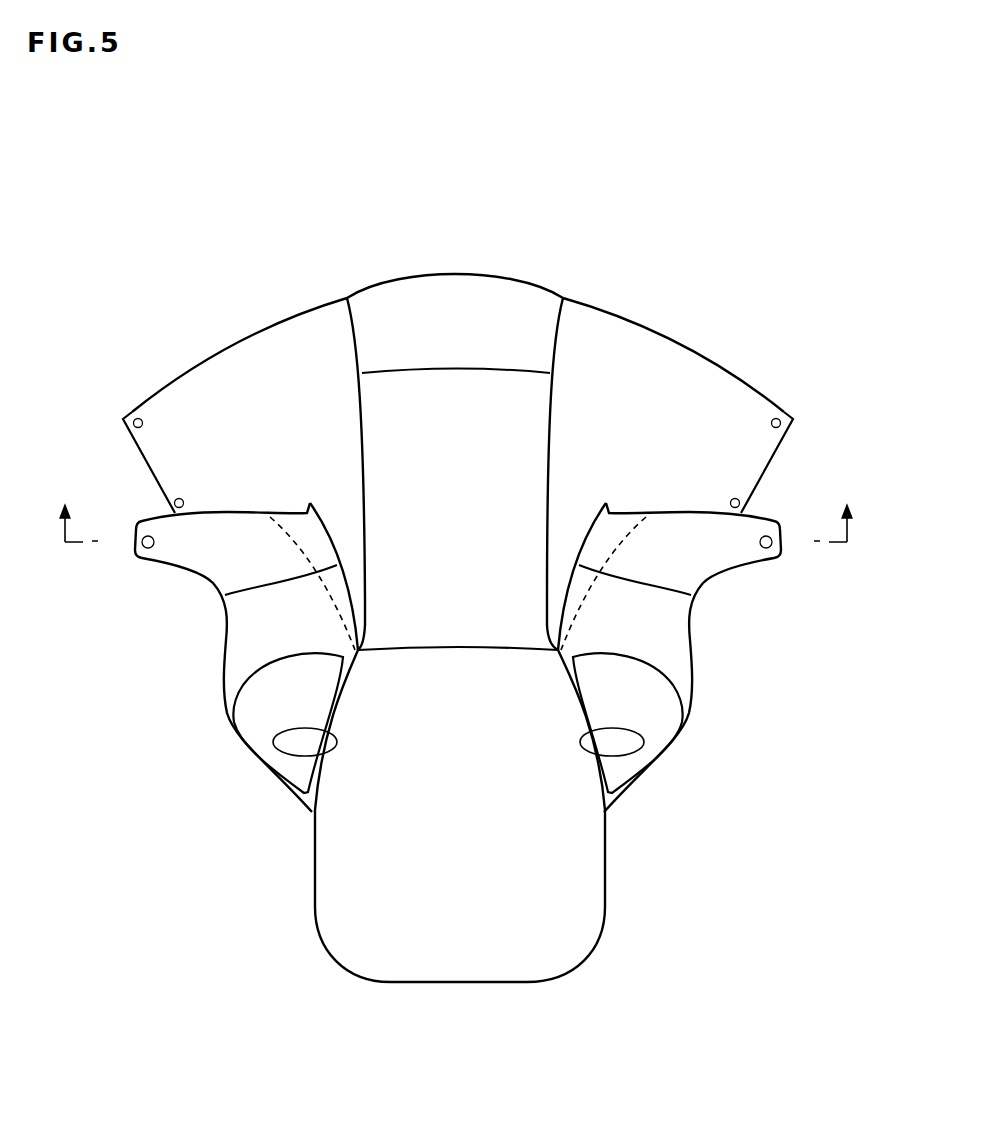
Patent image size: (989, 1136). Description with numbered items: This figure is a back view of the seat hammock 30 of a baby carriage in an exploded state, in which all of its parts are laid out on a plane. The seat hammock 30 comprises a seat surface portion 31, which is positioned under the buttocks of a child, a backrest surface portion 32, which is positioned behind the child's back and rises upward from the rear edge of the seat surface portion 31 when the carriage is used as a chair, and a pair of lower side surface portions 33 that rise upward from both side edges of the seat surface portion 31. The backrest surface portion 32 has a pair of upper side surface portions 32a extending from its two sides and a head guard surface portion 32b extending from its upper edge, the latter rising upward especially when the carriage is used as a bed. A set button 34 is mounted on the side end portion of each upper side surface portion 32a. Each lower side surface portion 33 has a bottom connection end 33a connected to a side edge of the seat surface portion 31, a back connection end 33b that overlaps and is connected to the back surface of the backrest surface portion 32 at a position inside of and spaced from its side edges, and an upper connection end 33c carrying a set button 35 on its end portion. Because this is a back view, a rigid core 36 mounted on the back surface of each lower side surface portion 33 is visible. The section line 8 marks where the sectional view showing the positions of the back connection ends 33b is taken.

The line 8— 8 is at (456, 509).
The seat hammock 30 is at (682, 275).
The seat surface portion 31 is at (552, 877).
The backrest surface portion 32 is at (515, 447).
The upper side surface portions 32a is at (212, 415).
The head guard surface portion 32b is at (453, 307).
The lower side surface portions 33 is at (258, 625).
The bottom connection end 33a is at (313, 752).
The back connection end 33b is at (222, 596).
The upper connection end 33c is at (165, 525).
The set button 34 is at (132, 412).
The set button 35 is at (142, 557).
The rigid core 36 is at (263, 698).